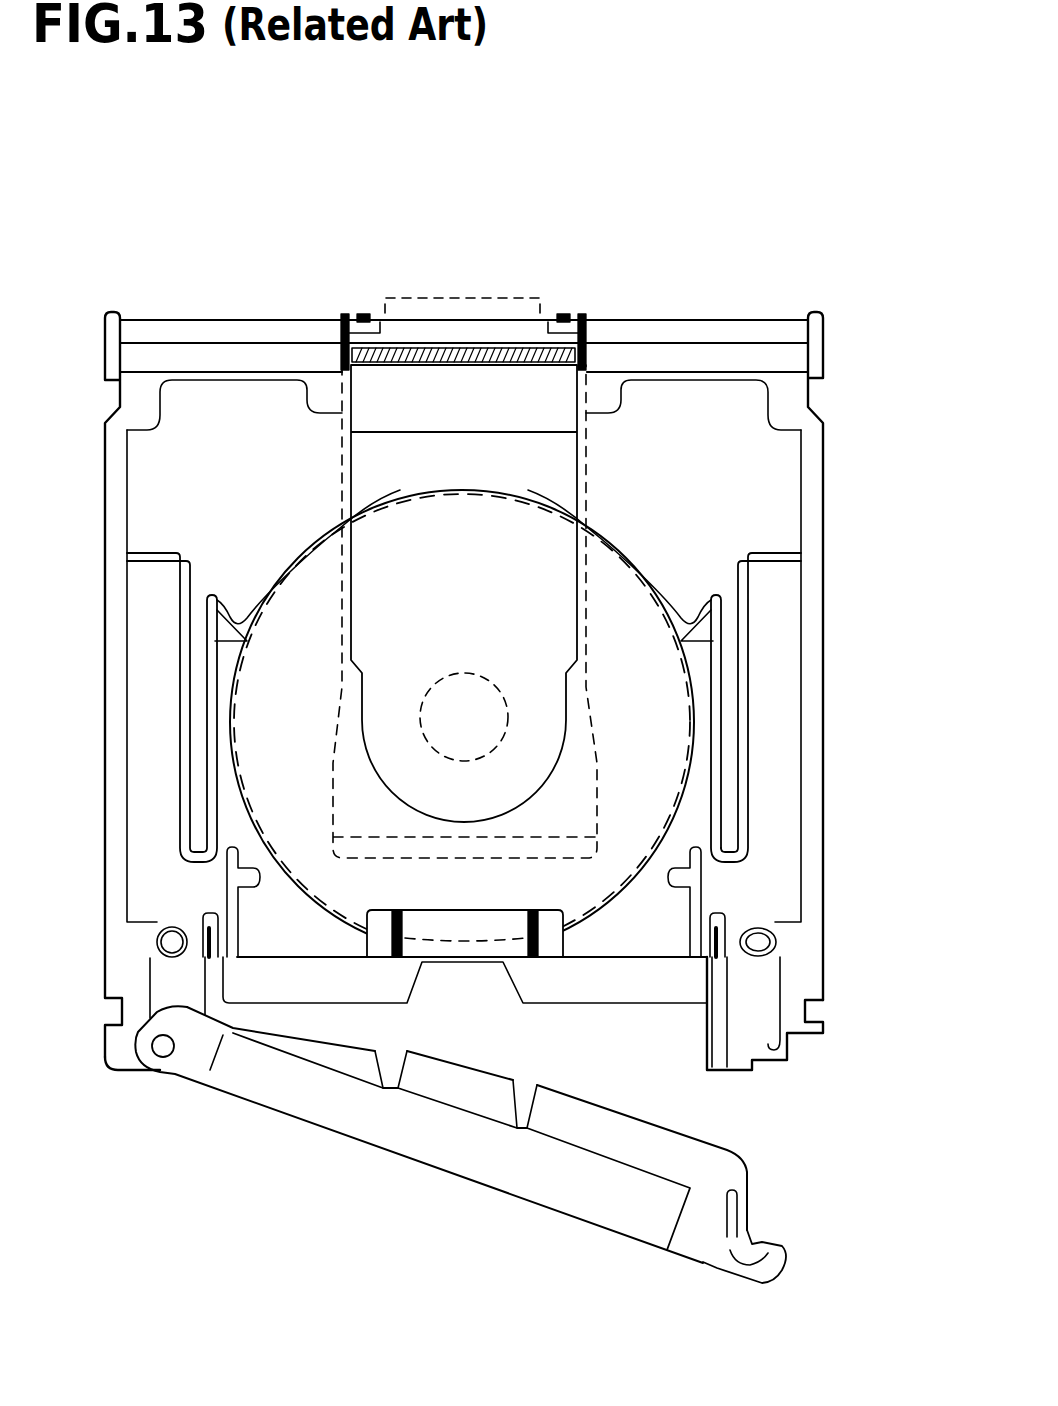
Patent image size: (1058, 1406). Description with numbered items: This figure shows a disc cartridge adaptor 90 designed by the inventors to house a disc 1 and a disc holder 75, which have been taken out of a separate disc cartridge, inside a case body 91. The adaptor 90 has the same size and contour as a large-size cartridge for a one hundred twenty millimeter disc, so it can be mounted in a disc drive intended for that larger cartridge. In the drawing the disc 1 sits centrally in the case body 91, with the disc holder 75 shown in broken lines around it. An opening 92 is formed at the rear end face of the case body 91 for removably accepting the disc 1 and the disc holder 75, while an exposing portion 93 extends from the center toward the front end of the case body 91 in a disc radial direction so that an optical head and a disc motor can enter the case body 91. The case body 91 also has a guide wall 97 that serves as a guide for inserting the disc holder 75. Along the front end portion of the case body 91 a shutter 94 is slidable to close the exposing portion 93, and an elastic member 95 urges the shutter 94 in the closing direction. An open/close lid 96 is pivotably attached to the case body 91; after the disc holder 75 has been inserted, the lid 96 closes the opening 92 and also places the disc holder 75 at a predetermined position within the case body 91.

The disc 1 is at (655, 590).
The disc holder 75 is at (703, 777).
The disc cartridge adaptor 90 is at (828, 452).
The case body 91 is at (825, 700).
The opening 92 is at (480, 1012).
The exposing portion 93 is at (495, 600).
The shutter 94 is at (425, 298).
The elastic member 95 is at (455, 348).
The open/close lid 96 is at (322, 1130).
The guide wall 97 is at (713, 652).